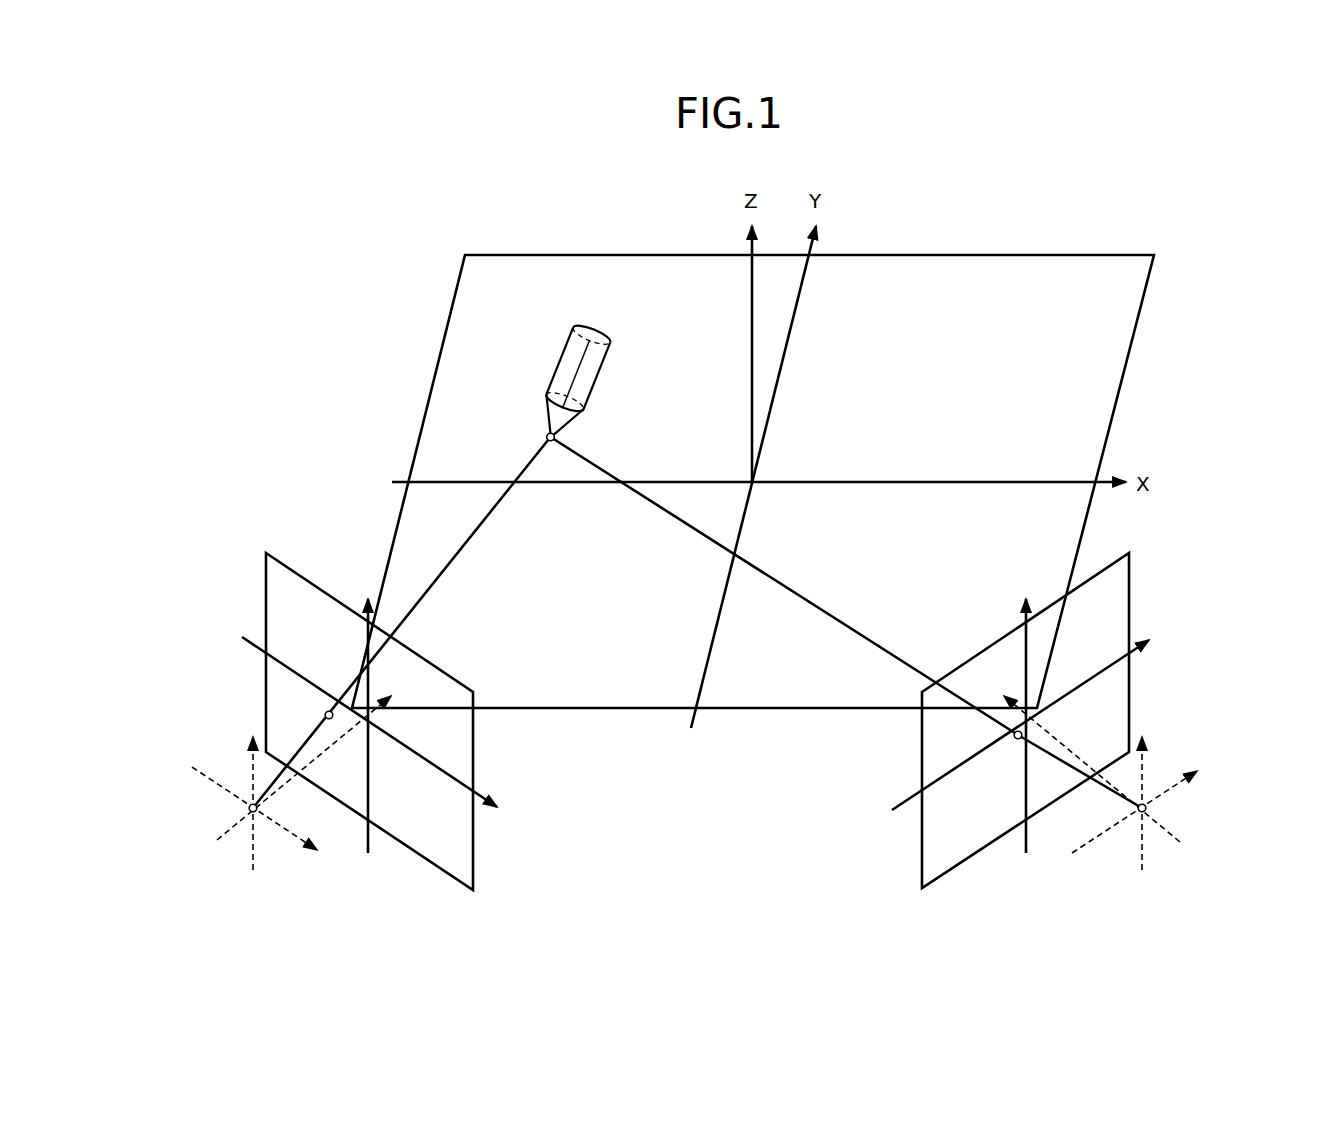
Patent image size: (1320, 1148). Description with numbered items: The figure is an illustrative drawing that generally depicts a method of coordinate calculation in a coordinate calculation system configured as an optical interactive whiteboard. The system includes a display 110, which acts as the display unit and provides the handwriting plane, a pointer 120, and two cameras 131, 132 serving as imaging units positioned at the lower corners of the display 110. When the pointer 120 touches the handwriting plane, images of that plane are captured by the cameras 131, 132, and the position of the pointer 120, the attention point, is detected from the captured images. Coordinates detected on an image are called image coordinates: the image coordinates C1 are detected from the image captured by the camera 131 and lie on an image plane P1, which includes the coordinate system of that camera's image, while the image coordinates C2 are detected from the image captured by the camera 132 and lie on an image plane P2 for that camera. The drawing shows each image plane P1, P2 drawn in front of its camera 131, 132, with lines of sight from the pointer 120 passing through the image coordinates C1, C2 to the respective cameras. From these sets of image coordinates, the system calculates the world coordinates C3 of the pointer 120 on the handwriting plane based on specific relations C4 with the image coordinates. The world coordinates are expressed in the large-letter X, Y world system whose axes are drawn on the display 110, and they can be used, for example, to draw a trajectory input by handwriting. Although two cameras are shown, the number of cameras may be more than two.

The display 110 is at (460, 277).
The pointer 120 is at (573, 355).
The camera 131 is at (247, 808).
The camera 132 is at (1148, 808).
The image coordinates C1 is at (325, 715).
The image coordinates C2 is at (1017, 740).
The world coordinates C3 is at (546, 437).
The specific relations C4 is at (468, 535).
The image plane P1 is at (278, 592).
The image plane P2 is at (1112, 592).